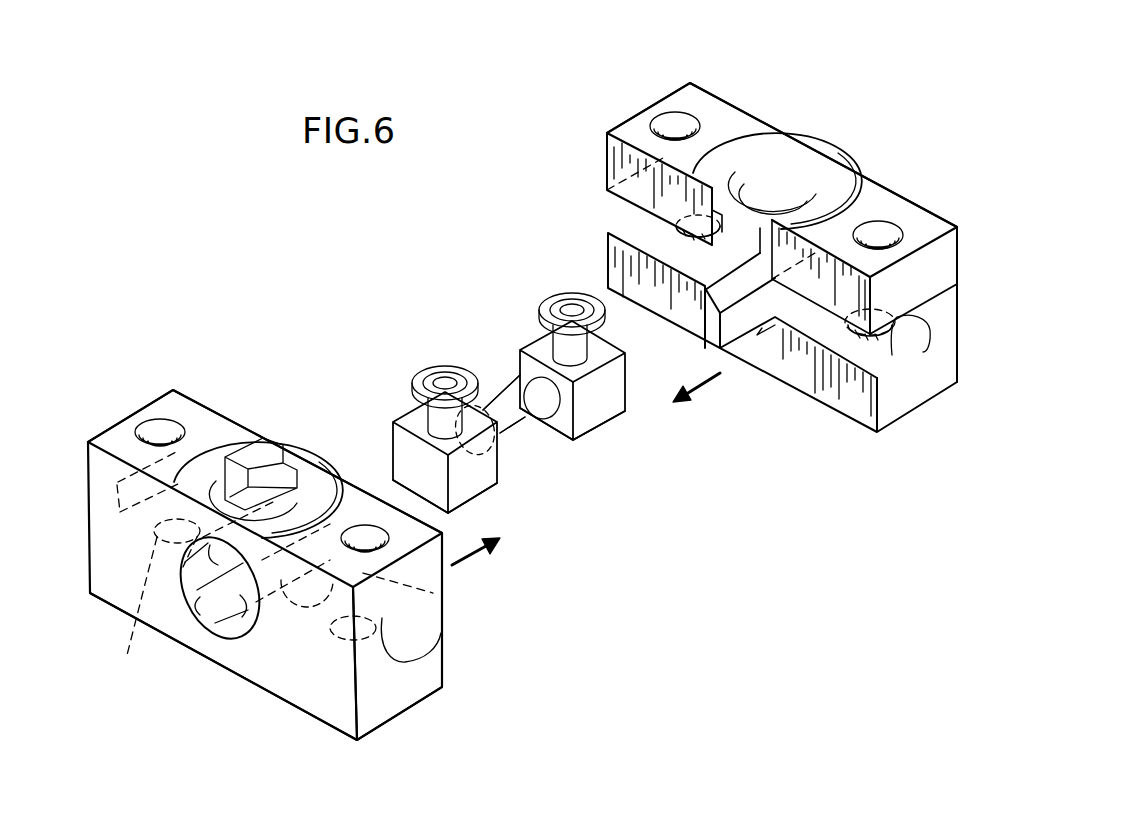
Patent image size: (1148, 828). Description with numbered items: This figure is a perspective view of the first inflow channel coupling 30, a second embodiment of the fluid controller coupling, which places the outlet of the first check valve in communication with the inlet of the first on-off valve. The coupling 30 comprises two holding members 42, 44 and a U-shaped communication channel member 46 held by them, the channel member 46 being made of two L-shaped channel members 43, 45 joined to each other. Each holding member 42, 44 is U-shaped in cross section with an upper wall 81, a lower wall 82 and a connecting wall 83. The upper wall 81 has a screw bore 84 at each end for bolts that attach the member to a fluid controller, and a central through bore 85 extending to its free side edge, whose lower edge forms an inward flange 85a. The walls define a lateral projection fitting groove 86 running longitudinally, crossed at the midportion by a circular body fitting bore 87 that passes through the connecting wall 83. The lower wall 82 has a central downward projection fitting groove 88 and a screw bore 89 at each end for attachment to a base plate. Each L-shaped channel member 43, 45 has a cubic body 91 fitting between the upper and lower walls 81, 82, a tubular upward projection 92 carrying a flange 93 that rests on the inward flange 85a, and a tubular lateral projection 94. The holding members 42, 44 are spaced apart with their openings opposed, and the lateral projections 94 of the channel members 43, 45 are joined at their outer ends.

The first inflow channel coupling 30 is at (752, 102).
The holding member 42 is at (377, 710).
The L-shaped channel member 43 is at (397, 433).
The holding member 44 is at (840, 407).
The L-shaped channel member 45 is at (533, 343).
The U-shaped communication channel member 46 is at (518, 440).
The upper wall 81 is at (433, 577).
The lower wall 82 is at (417, 690).
The connecting wall 83 is at (367, 663).
The screw bore 84 is at (148, 417).
The through bore 85 is at (252, 463).
The inward flange 85a is at (237, 493).
The lateral projection fitting groove 86 is at (437, 623).
The body fitting bore 87 is at (203, 610).
The downward projection fitting groove 88 is at (243, 623).
The screw bore 89 is at (140, 613).
The cubic body 91 is at (477, 477).
The tubular upward projection 92 is at (432, 416).
The flange 93 is at (440, 363).
The tubular lateral projection 94 is at (498, 396).